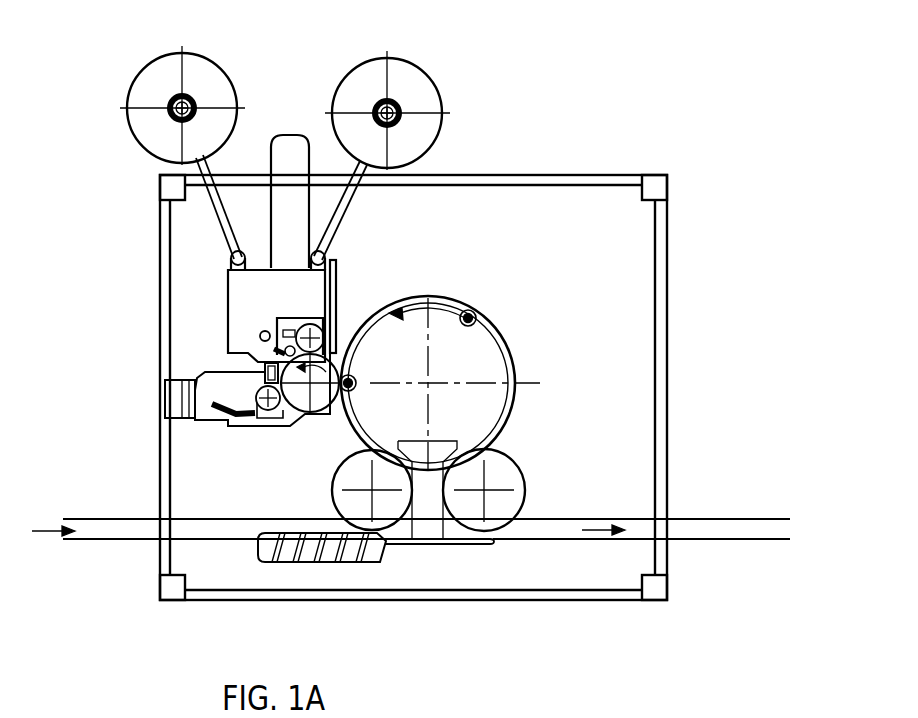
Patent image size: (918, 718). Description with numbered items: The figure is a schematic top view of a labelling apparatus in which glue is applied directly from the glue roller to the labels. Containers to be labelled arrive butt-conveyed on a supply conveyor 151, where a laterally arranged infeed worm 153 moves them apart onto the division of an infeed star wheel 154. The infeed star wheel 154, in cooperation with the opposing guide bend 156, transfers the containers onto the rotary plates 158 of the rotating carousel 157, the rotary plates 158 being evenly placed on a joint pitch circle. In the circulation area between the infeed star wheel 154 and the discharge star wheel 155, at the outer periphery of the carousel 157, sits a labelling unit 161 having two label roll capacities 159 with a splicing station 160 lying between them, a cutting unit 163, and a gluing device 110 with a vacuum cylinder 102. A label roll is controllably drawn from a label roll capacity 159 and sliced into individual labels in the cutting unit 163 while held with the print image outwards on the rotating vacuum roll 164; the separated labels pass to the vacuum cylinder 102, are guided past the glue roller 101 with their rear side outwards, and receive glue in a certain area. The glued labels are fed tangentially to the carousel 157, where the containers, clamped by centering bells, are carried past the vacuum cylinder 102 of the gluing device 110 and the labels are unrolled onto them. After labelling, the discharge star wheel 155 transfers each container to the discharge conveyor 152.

The glue roller 101 is at (266, 410).
The vacuum cylinder 102 is at (288, 363).
The gluing device 110 is at (203, 428).
The supply conveyor 151 is at (108, 530).
The discharge conveyor 152 is at (740, 540).
The infeed worm 153 is at (300, 564).
The infeed star wheel 154 is at (393, 512).
The discharge star wheel 155 is at (495, 512).
The guide bend 156 is at (440, 546).
The carousel 157 is at (492, 402).
The rotary plates 158 is at (468, 310).
The label roll capacities 159 is at (368, 72).
The splicing station 160 is at (290, 122).
The labelling unit 161 is at (212, 263).
The cutting unit 163 is at (258, 326).
The vacuum roll 164 is at (320, 326).